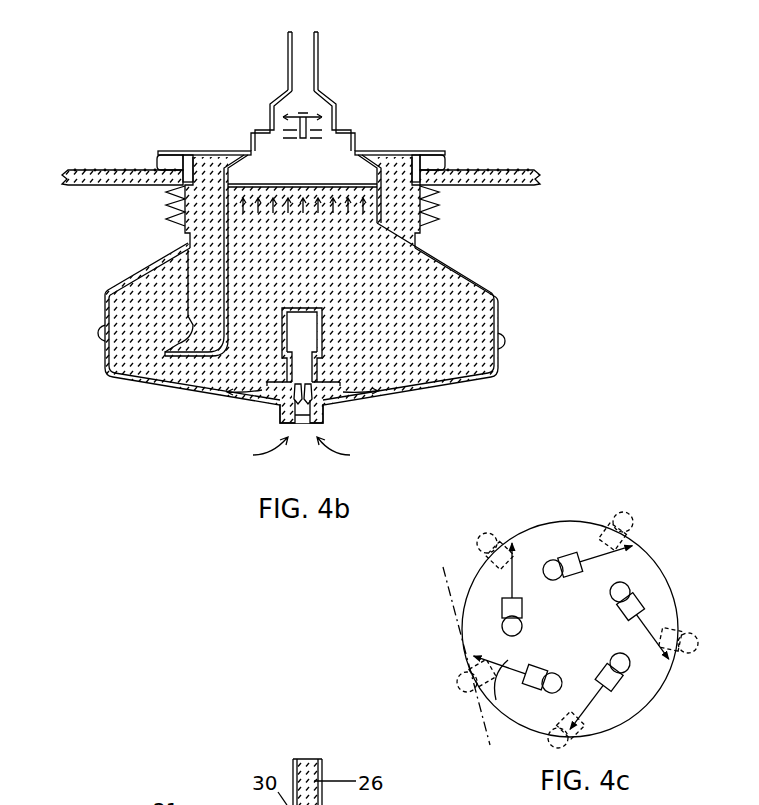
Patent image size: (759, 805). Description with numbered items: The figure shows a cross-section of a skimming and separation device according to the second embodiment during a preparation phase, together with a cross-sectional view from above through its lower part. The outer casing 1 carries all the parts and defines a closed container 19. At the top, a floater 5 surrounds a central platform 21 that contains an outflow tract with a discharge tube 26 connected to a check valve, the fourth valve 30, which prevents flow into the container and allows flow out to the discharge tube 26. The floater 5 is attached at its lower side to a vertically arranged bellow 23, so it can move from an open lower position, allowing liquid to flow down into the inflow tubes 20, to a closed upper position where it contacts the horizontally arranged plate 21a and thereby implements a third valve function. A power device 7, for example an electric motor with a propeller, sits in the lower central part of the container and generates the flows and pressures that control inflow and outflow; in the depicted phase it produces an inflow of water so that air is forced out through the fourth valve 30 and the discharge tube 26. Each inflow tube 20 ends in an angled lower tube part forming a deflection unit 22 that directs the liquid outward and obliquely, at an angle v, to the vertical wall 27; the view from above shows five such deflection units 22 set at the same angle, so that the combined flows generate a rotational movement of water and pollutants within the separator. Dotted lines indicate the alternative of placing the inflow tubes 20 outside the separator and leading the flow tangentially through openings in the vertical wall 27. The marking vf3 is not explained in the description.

In FIG. 4b, the outer casing 1 is at (488, 287).
In FIG. 4b, the floater 5 is at (177, 160).
In FIG. 4b, the power device 7 is at (303, 365).
In FIG. 4b, the closed container 19 is at (408, 302).
In FIG. 4b, the inflow tubes 20 is at (185, 263).
In FIG. 4c, the inflow tubes 20 is at (497, 540).
In FIG. 4b, the central platform 21 is at (360, 147).
In FIG. 4b, the horizontally arranged plate 21a is at (177, 147).
In FIG. 4b, the deflection unit 22 is at (193, 330).
In FIG. 4c, the deflection unit 22 is at (508, 527).
In FIG. 4b, the bellow 23 is at (167, 210).
In FIG. 4b, the discharge tube 26 is at (300, 55).
In FIG. 4b, the vertical wall 27 is at (103, 323).
In FIG. 4c, the vertical wall 27 is at (663, 567).
In FIG. 4b, the fourth valve 30 is at (316, 107).
In FIG. 4b, the flow direction vf3 is at (155, 155).